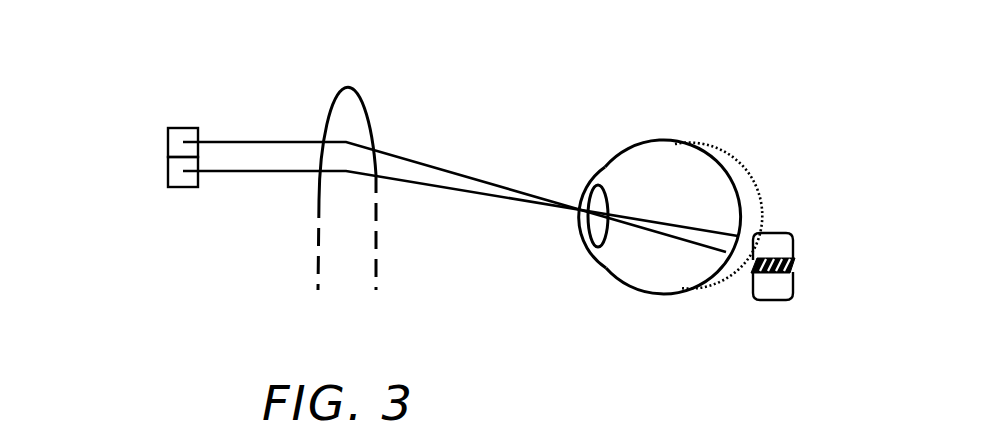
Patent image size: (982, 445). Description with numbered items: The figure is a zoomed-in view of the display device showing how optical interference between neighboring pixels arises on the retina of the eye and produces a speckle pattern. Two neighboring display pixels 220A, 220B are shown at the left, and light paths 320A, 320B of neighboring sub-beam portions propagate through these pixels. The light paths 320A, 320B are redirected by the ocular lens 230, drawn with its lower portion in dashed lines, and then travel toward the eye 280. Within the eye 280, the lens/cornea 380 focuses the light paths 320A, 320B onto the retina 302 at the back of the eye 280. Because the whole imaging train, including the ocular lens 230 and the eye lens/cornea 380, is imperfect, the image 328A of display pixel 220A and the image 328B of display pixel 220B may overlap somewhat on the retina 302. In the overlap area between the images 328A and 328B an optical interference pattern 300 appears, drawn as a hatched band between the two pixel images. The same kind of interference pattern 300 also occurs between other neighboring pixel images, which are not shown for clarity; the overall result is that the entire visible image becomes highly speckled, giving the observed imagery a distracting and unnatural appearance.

The display pixel 220A is at (182, 136).
The display pixel 220B is at (180, 180).
The ocular lens 230 is at (348, 88).
The light path 320A is at (289, 141).
The light path 320B is at (287, 174).
The eye 280 is at (641, 150).
The retina 302 is at (710, 152).
The lens/cornea 380 is at (598, 185).
The optical interference pattern 300 is at (807, 271).
The image of display pixel 328A is at (772, 298).
The image of display pixel 328B is at (777, 243).